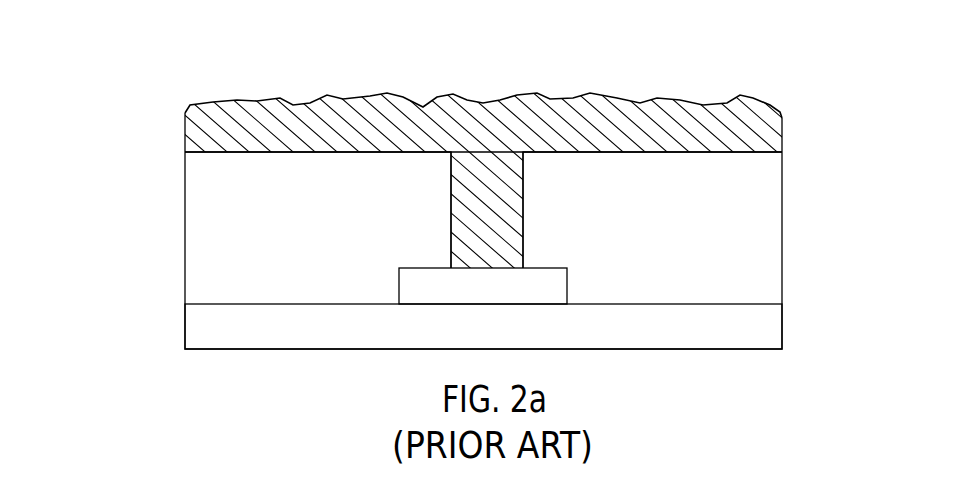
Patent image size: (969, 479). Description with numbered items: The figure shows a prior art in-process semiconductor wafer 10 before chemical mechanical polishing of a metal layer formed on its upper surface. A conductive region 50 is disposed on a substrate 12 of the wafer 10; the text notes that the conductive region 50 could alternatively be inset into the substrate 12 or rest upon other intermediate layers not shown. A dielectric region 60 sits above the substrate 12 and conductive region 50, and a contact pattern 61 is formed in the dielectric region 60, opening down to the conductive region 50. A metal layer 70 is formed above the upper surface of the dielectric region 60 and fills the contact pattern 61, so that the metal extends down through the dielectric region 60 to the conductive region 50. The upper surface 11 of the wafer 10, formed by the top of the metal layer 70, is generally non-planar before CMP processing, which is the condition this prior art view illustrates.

The in-process semiconductor wafer 10 is at (146, 314).
The upper surface 11 is at (750, 82).
The substrate 12 is at (665, 330).
The conductive region 50 is at (427, 285).
The dielectric region 60 is at (714, 246).
The contact pattern 61 is at (535, 218).
The metal layer 70 is at (250, 132).